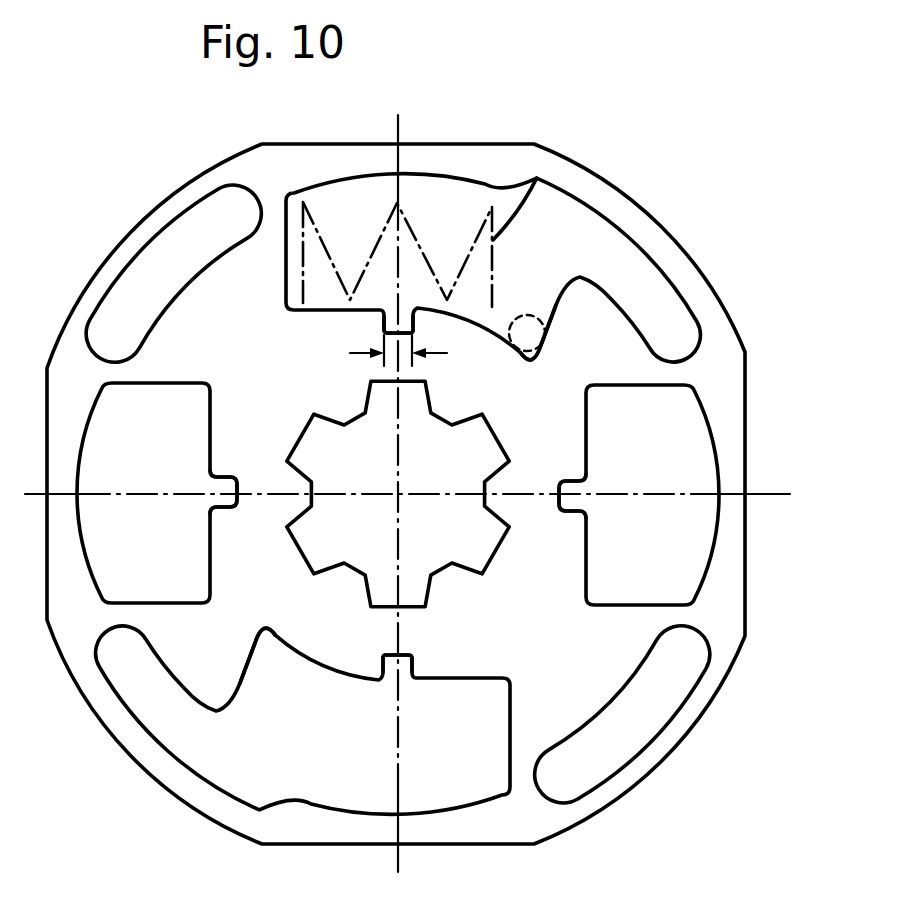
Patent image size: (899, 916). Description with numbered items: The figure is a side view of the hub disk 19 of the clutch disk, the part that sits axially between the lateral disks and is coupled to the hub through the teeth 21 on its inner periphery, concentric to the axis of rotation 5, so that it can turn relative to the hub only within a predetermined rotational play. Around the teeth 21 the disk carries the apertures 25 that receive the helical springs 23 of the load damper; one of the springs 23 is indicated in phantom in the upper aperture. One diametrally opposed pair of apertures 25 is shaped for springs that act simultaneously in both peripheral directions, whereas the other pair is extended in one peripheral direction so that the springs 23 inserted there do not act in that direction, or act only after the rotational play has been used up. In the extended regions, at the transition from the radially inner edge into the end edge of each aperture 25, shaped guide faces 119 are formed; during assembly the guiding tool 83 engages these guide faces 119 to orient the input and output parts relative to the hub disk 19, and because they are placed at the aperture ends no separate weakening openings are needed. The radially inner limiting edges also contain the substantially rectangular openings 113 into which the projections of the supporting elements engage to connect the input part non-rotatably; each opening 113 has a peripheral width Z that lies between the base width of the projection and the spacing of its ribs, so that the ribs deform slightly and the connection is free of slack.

The hub disk 19 is at (717, 368).
The aperture 25 is at (420, 187).
The opening 113 is at (385, 322).
The guide face 119 is at (535, 362).
The helical spring 23 is at (500, 237).
The guiding tool 83 is at (525, 315).
The teeth 21 is at (442, 571).
The axis of rotation 5 is at (398, 494).
The dimension Z is at (405, 355).